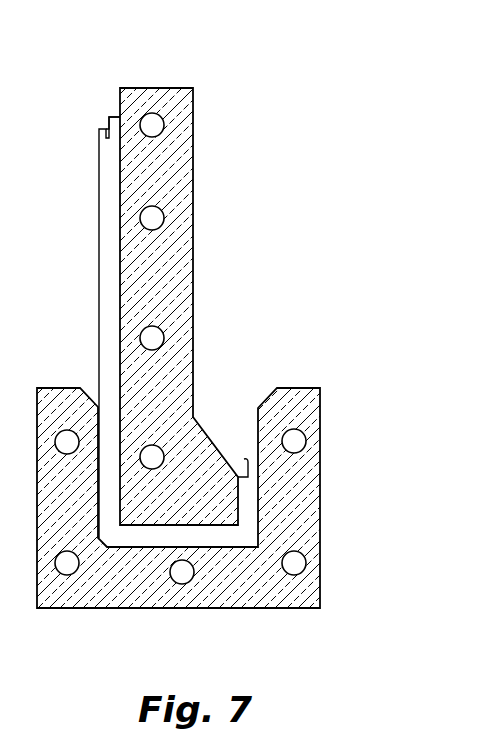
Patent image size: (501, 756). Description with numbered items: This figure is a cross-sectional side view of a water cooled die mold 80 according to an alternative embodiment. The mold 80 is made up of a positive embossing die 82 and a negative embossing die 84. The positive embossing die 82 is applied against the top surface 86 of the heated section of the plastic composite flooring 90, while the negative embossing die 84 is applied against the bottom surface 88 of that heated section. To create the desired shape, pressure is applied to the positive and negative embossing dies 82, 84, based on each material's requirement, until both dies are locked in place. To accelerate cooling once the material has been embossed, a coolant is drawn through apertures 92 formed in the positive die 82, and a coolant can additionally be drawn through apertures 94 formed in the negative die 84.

The mold 80 is at (52, 352).
The positive embossing die 82 is at (167, 88).
The negative embossing die 84 is at (245, 608).
The top surface 86 is at (98, 173).
The bottom surface 88 is at (122, 285).
The plastic composite flooring 90 is at (116, 115).
The apertures 92 is at (164, 125).
The apertures 94 is at (298, 440).